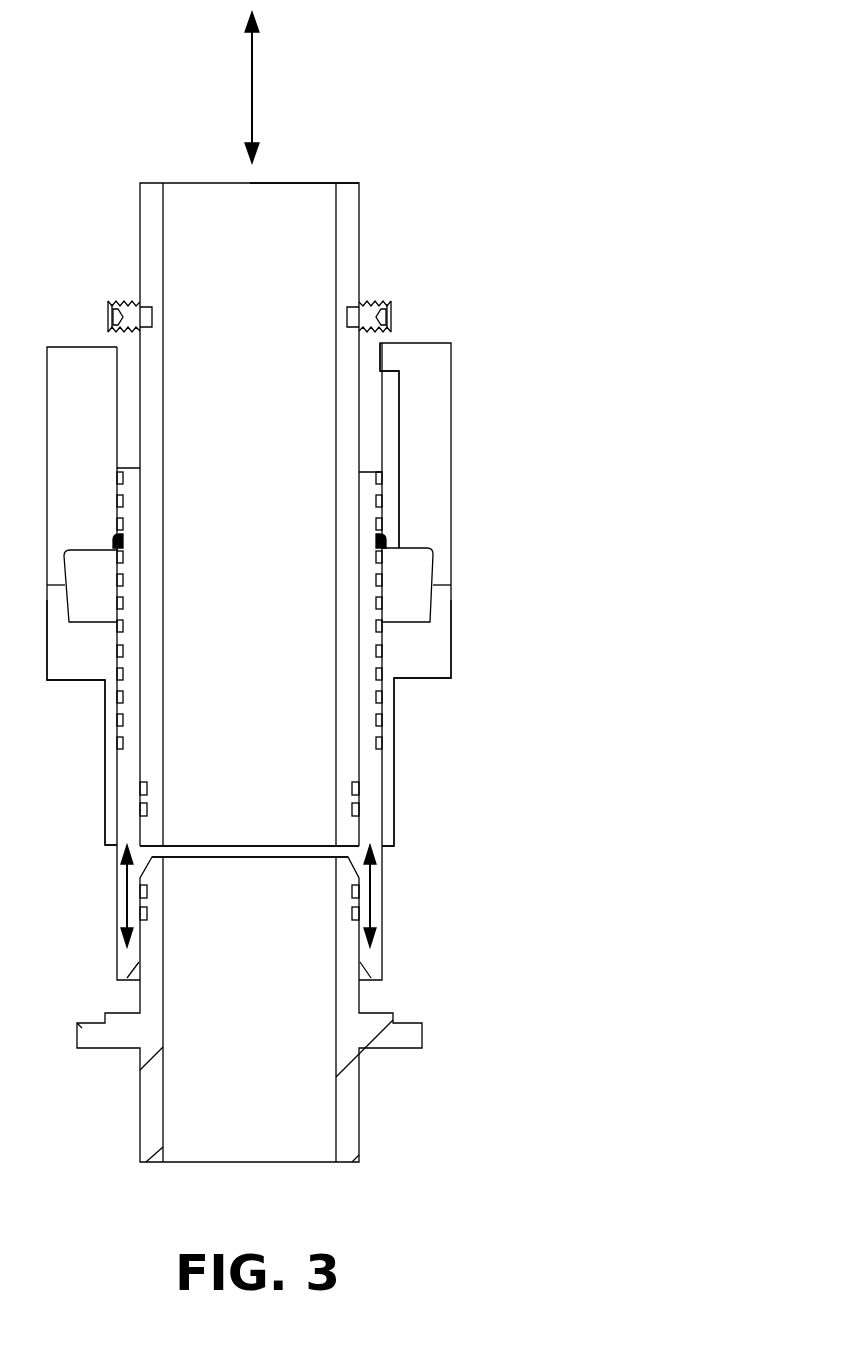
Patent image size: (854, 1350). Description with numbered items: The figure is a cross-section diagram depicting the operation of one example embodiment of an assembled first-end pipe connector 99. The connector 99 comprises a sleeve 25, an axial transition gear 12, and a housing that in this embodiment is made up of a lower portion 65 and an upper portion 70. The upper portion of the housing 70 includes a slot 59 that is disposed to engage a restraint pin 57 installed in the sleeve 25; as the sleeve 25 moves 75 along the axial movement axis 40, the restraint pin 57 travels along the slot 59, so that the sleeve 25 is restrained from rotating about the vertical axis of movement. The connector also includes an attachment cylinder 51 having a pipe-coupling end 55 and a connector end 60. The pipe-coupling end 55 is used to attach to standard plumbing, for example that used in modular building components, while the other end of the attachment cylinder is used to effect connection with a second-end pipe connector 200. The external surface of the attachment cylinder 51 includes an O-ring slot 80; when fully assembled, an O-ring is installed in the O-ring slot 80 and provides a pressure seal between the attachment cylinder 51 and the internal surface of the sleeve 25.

The first-end pipe connector 99 is at (478, 199).
The axial movement axis 40 is at (253, 100).
The attachment cylinder 51 is at (291, 514).
The pipe-coupling end 55 is at (325, 184).
The O-ring slot 80 is at (352, 787).
The upper portion of the housing 70 is at (290, 594).
The lower portion of the housing 65 is at (452, 640).
The slot 59 is at (400, 428).
The axial transition gear 12 is at (418, 573).
The restraint pin 57 is at (386, 540).
The sleeve 25 is at (358, 471).
The connector end 60 is at (160, 846).
The sleeve movement 75 is at (372, 870).
The second-end pipe connector 200 is at (422, 1027).